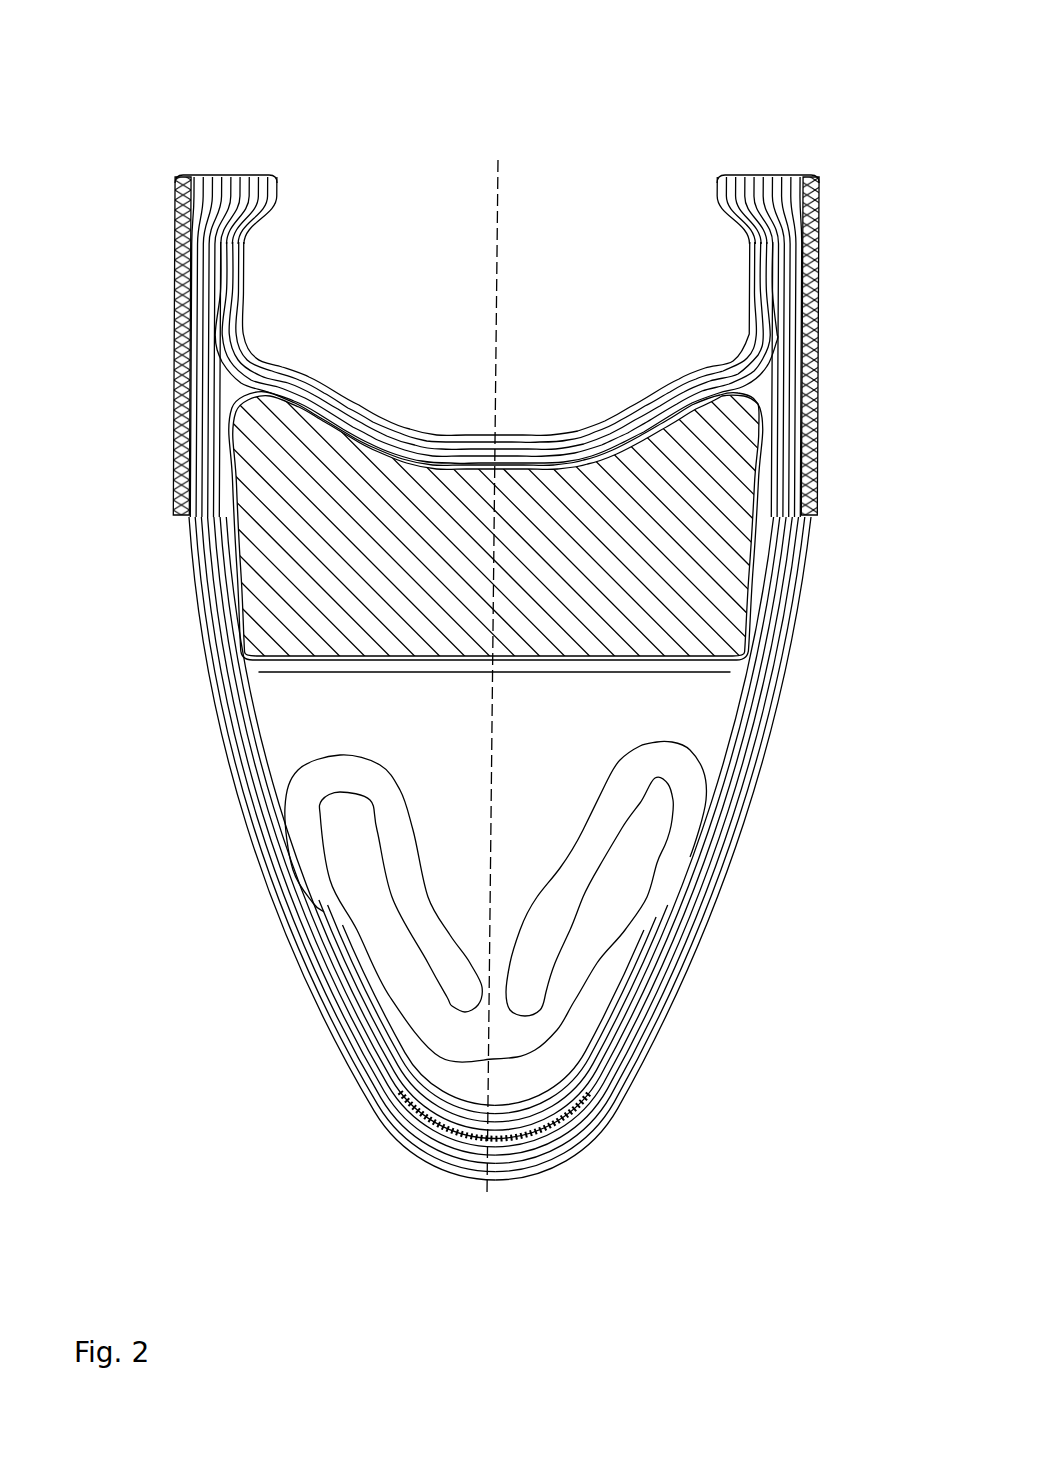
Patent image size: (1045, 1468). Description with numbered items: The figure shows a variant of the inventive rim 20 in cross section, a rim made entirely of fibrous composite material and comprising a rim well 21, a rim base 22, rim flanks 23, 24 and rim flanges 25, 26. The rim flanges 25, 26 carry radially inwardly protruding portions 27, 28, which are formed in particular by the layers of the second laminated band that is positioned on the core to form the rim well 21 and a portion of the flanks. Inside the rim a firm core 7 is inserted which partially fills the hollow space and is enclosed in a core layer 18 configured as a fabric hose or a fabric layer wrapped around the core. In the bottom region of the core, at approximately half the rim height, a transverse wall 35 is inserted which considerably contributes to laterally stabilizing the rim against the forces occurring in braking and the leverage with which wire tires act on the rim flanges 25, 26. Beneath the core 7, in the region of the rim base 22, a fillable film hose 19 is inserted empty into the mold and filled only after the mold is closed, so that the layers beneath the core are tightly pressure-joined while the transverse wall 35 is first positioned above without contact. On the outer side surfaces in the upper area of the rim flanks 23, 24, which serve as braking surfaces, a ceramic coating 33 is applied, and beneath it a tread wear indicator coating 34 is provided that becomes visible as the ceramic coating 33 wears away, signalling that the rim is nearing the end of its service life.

The rim 20 is at (145, 117).
The rim flange 25 is at (232, 160).
The rim flange 26 is at (778, 160).
The radially inwardly protruding portion 27 is at (272, 183).
The radially inwardly protruding portion 28 is at (720, 183).
The ceramic coating 33 is at (816, 212).
The tread wear indicator coating 34 is at (816, 310).
The core layer 18 is at (240, 390).
The rim well 21 is at (568, 435).
The core 7 is at (300, 522).
The rim flank 23 is at (178, 615).
The rim flank 24 is at (808, 652).
The fillable film hose 19 is at (400, 772).
The transverse wall 35 is at (540, 672).
The rim base 22 is at (445, 1195).